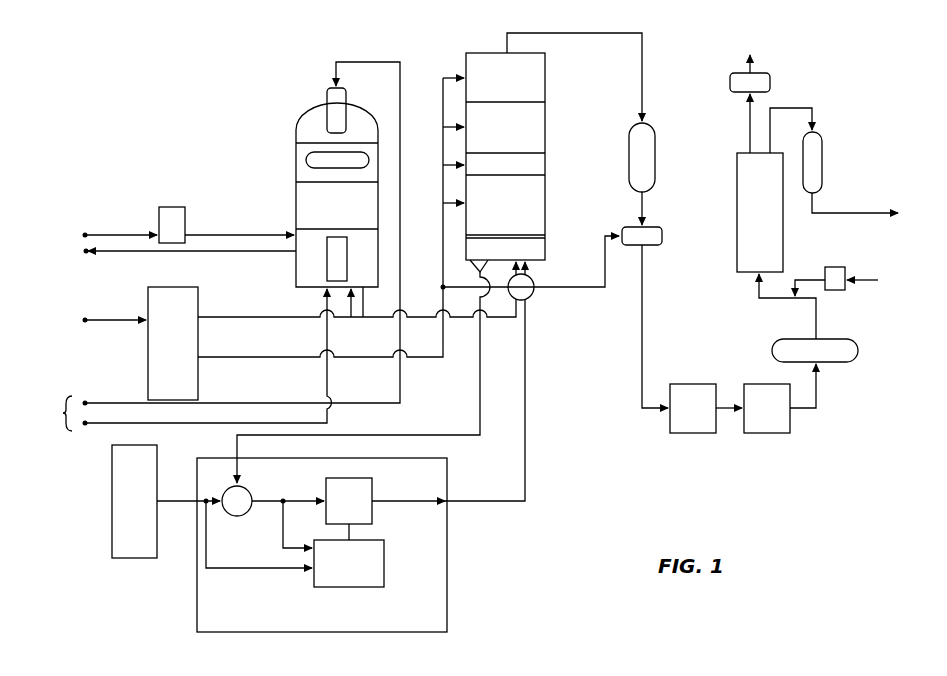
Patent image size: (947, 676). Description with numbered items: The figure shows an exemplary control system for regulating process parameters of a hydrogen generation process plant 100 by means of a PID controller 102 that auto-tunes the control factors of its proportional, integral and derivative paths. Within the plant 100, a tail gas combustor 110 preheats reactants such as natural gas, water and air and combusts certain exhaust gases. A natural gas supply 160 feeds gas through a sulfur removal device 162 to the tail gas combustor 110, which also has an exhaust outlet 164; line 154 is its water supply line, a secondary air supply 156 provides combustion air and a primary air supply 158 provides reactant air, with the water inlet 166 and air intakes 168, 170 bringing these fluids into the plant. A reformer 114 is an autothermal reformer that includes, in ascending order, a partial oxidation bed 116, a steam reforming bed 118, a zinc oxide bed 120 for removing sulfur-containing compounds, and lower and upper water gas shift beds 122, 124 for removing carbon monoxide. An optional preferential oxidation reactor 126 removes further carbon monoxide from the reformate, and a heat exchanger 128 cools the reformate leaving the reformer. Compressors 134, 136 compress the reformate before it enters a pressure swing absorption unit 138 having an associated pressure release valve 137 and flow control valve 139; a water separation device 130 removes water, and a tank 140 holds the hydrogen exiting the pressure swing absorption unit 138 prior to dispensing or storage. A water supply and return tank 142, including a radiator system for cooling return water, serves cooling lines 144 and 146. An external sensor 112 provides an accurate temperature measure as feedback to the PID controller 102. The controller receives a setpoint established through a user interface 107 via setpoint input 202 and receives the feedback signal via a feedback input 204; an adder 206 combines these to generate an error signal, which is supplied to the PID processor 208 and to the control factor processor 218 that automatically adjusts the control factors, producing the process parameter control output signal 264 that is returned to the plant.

The plant 100 is at (199, 139).
The PID controller 102 is at (447, 460).
The user interface 107 is at (112, 557).
The tail gas combustor 110 is at (303, 127).
The external sensor 112 is at (468, 265).
The reformer 114 is at (464, 54).
The partial oxidation bed 116 is at (546, 256).
The steam reforming bed 118 is at (546, 208).
The zinc oxide bed 120 is at (546, 167).
The lower water gas shift bed 122 is at (546, 131).
The upper water gas shift bed 124 is at (546, 84).
The preferential oxidation reactor 126 is at (656, 171).
The heat exchanger 128 is at (671, 226).
The water separation device 130 is at (845, 361).
The first compressor 134 is at (700, 433).
The second compressor 136 is at (778, 433).
The pressure release valve 137 is at (770, 84).
The pressure swing absorption unit 138 is at (737, 262).
The flow control valve 139 is at (835, 291).
The tank 140 is at (822, 173).
The water supply and return tank 142 is at (148, 290).
The cooling line 144 is at (598, 290).
The cooling line 146 is at (461, 79).
The water supply line 154 is at (252, 319).
The secondary air supply 156 is at (252, 404).
The primary air supply 158 is at (328, 424).
The natural gas supply 160 is at (88, 232).
The sulfur removal device 162 is at (176, 205).
The exhaust outlet 164 is at (88, 255).
The water inlet 166 is at (88, 325).
The air intake 168 is at (87, 400).
The air intake 170 is at (87, 450).
The setpoint input 202 is at (167, 500).
The feedback input 204 is at (478, 384).
The adder 206 is at (254, 491).
The PID processor 208 is at (373, 481).
The control factor processor 218 is at (384, 579).
The process parameter control output signal 264 is at (527, 496).